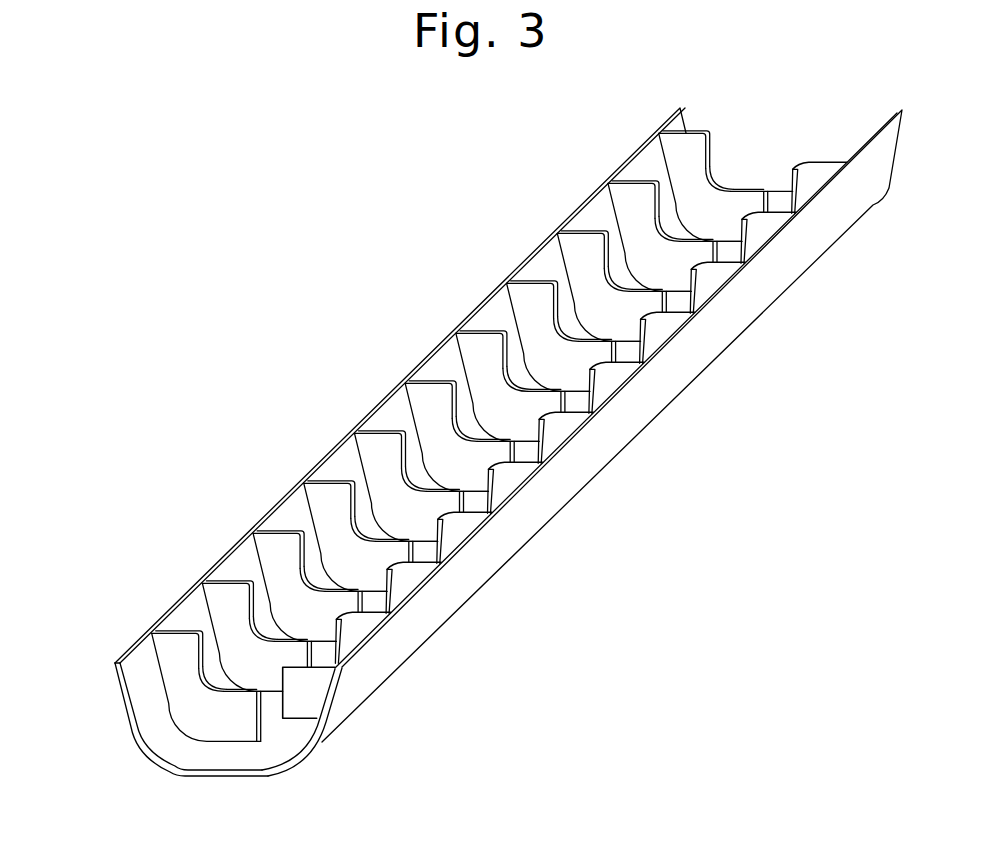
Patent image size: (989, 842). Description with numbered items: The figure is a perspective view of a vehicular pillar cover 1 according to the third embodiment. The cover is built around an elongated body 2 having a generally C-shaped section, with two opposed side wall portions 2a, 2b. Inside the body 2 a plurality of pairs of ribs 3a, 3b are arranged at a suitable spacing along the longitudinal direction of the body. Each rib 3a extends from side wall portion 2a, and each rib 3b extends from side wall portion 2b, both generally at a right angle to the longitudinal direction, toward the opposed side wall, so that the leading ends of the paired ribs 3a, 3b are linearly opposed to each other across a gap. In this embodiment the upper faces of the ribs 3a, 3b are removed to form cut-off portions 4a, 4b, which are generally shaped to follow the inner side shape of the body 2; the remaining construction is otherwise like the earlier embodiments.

The vehicular pillar cover 1 is at (757, 117).
The body 2 is at (128, 753).
The side wall portion 2a is at (573, 473).
The side wall portion 2b is at (398, 391).
The rib 3a is at (691, 381).
The rib 3b is at (532, 300).
The cut-off portion 4a is at (402, 666).
The cut-off portion 4b is at (182, 611).